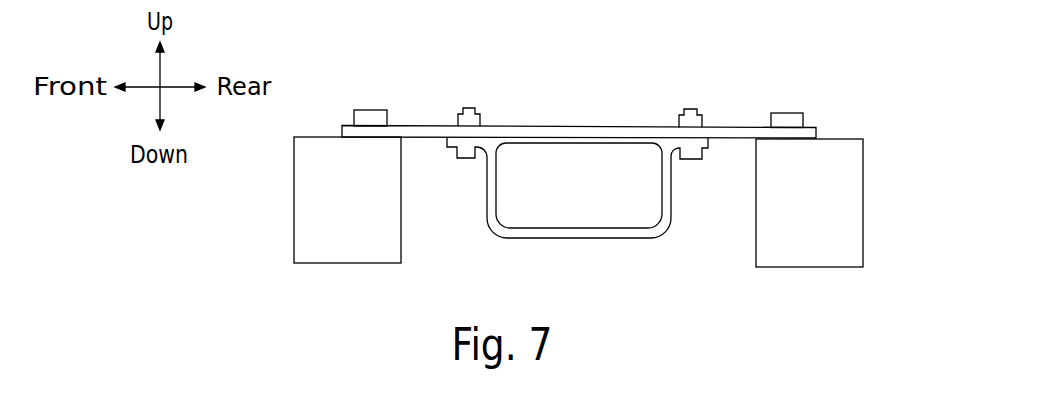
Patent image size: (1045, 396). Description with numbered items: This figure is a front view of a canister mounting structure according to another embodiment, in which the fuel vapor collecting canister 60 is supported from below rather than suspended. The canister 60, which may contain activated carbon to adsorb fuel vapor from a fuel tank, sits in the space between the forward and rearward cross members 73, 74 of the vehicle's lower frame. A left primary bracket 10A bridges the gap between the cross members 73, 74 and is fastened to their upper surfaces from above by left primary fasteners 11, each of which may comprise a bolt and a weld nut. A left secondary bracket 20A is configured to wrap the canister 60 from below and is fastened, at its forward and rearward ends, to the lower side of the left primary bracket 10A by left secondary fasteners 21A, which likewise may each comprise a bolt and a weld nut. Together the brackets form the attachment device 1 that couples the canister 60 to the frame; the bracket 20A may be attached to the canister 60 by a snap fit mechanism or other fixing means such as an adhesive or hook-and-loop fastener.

The first attachment device 1 is at (658, 86).
The left primary bracket 10A is at (420, 125).
The left primary fastener 11 is at (373, 110).
The left secondary bracket 20A is at (583, 238).
The left secondary fastener 21A is at (467, 160).
The fuel vapor collecting canister 60 is at (580, 165).
The cross member 73 is at (294, 200).
The cross member 74 is at (863, 208).